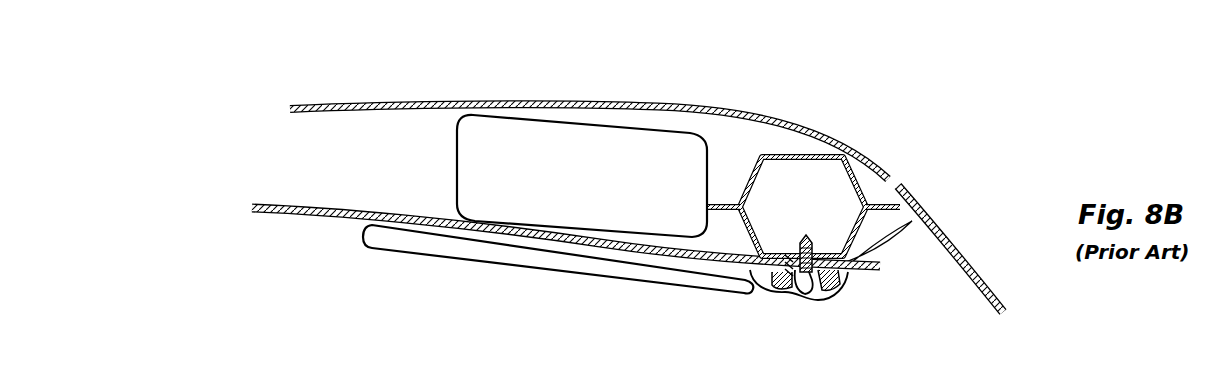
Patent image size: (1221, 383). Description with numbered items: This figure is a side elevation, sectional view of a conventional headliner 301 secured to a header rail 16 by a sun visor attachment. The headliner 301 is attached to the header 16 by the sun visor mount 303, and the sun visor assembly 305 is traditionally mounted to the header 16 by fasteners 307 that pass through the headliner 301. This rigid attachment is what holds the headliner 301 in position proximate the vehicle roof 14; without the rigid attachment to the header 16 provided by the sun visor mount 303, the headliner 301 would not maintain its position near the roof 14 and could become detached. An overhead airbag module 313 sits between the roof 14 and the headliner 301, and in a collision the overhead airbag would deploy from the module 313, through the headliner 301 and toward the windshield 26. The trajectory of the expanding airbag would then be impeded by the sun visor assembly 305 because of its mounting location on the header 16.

The vehicle roof 14 is at (733, 112).
The header rail 16 is at (808, 178).
The windshield 26 is at (940, 229).
The headliner 301 is at (643, 253).
The sun visor mount 303 is at (812, 312).
The sun visor assembly 305 is at (768, 317).
The fasteners 307 is at (842, 282).
The overhead airbag module 313 is at (475, 153).